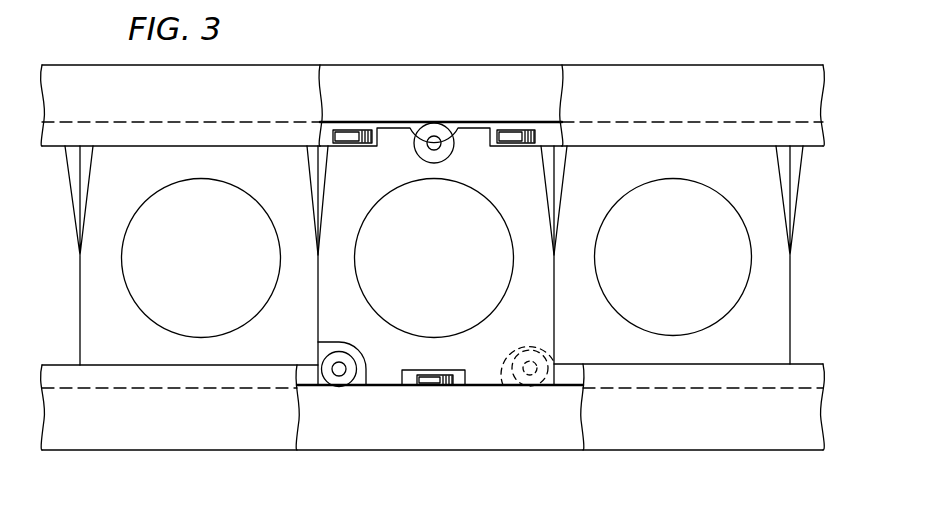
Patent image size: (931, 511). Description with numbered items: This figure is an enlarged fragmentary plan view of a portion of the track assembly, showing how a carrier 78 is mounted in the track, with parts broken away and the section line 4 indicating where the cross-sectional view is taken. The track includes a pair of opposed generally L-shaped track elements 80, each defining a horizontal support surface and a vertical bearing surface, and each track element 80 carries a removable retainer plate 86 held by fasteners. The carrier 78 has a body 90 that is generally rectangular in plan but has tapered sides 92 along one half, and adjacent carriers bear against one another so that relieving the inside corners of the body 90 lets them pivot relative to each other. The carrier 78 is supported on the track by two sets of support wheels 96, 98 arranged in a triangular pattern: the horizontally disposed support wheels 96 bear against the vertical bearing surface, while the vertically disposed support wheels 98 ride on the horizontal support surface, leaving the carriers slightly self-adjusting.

The section line 4- 4 is at (555, 112).
The carrier 78 is at (338, 316).
The track element 80 is at (405, 78).
The retainer plate 86 is at (676, 110).
The body 90 is at (122, 320).
The tapered sides 92 is at (336, 183).
The horizontal support wheels 96 is at (445, 152).
The vertical support wheels 98 is at (338, 133).